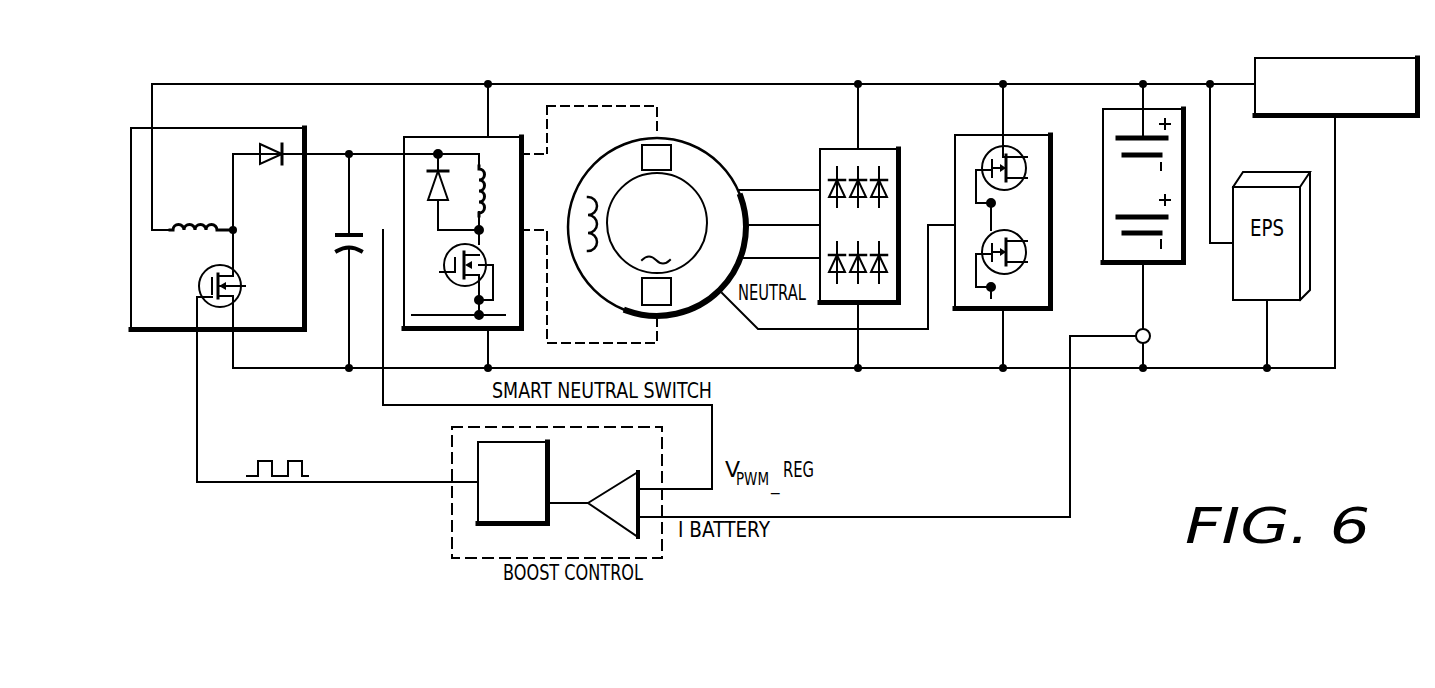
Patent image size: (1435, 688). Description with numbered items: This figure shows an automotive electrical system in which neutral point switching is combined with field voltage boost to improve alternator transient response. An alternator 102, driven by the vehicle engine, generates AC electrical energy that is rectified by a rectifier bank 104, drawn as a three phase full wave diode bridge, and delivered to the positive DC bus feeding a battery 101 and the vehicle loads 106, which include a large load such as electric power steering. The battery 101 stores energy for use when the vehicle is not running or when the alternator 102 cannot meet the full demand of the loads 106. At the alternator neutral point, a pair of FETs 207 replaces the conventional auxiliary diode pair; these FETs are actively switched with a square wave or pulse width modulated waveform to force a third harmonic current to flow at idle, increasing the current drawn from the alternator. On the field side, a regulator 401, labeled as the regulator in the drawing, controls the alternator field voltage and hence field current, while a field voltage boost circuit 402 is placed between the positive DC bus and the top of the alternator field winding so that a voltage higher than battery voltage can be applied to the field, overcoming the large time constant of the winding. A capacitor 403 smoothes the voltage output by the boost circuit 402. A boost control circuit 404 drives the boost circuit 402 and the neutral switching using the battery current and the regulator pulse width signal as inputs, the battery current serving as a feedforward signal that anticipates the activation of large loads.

The battery 101 is at (1118, 265).
The alternator 102 is at (668, 138).
The rectifier bank 104 is at (824, 148).
The loads 106 is at (1342, 57).
The pair of FETs 207 is at (1066, 121).
The regulator 401 is at (445, 136).
The field voltage boost circuit 402 is at (255, 128).
The capacitor 403 is at (395, 217).
The boost control circuit 404 is at (452, 462).